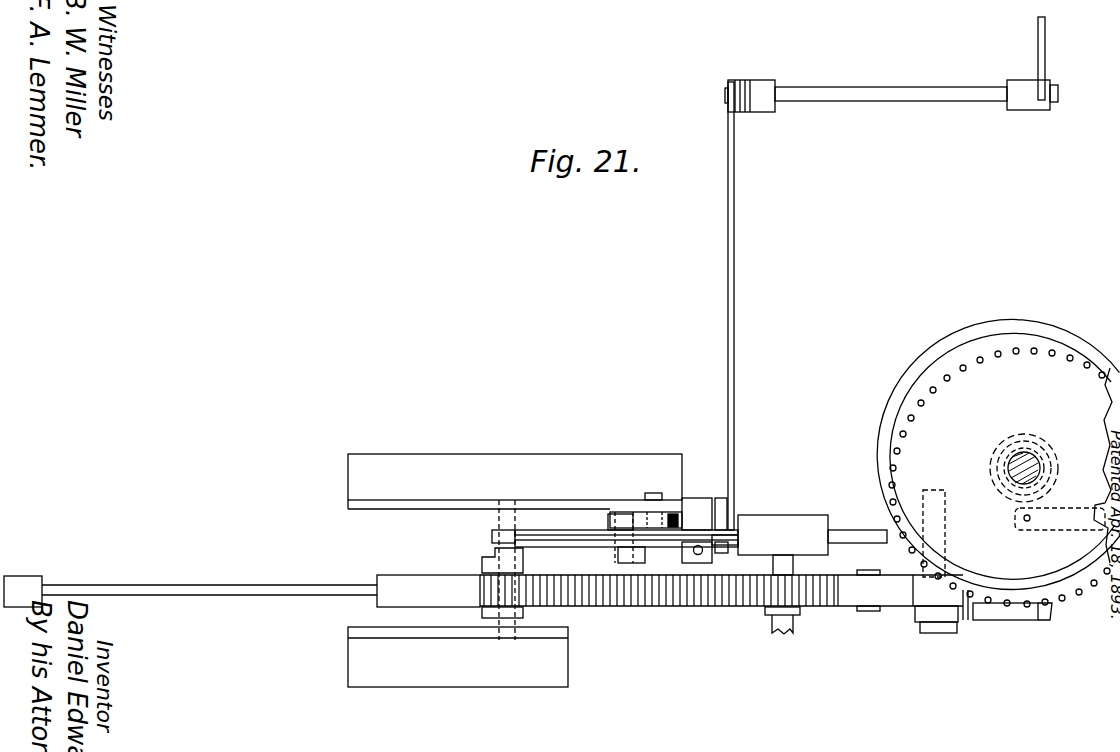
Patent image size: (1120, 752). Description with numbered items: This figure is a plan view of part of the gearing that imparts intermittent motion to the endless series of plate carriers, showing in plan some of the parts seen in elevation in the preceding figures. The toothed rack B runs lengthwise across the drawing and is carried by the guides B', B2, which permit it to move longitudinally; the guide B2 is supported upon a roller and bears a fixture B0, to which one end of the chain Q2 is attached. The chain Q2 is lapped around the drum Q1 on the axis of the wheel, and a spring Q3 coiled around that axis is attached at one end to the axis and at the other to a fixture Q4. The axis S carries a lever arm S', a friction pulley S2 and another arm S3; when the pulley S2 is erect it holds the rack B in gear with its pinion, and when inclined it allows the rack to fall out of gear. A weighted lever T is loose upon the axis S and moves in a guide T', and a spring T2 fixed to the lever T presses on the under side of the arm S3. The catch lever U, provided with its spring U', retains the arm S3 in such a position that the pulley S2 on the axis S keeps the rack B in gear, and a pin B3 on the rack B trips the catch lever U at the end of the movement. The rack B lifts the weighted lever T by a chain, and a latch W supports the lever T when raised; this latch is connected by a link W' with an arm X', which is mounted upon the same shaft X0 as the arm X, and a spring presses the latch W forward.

The toothed rack B is at (724, 601).
The guide B' is at (242, 579).
The fixture B0 is at (975, 620).
The guide B2 is at (1052, 612).
The pin B3 is at (947, 533).
The drum Q1 is at (998, 463).
The chain Q2 is at (897, 455).
The spring Q3 is at (1002, 453).
The fixture Q4 is at (1094, 512).
The axis S is at (504, 570).
The lever arm S' is at (485, 544).
The friction pulley S2 is at (482, 571).
The arm S3 is at (612, 513).
The weighted lever T is at (701, 571).
The guide T' is at (707, 559).
The spring T2 is at (626, 530).
The catch lever U is at (646, 495).
The spring U' is at (690, 492).
The latch W is at (746, 499).
The link W' is at (745, 306).
The arm X is at (1035, 63).
The arm X' is at (738, 104).
The shaft X0 is at (930, 84).